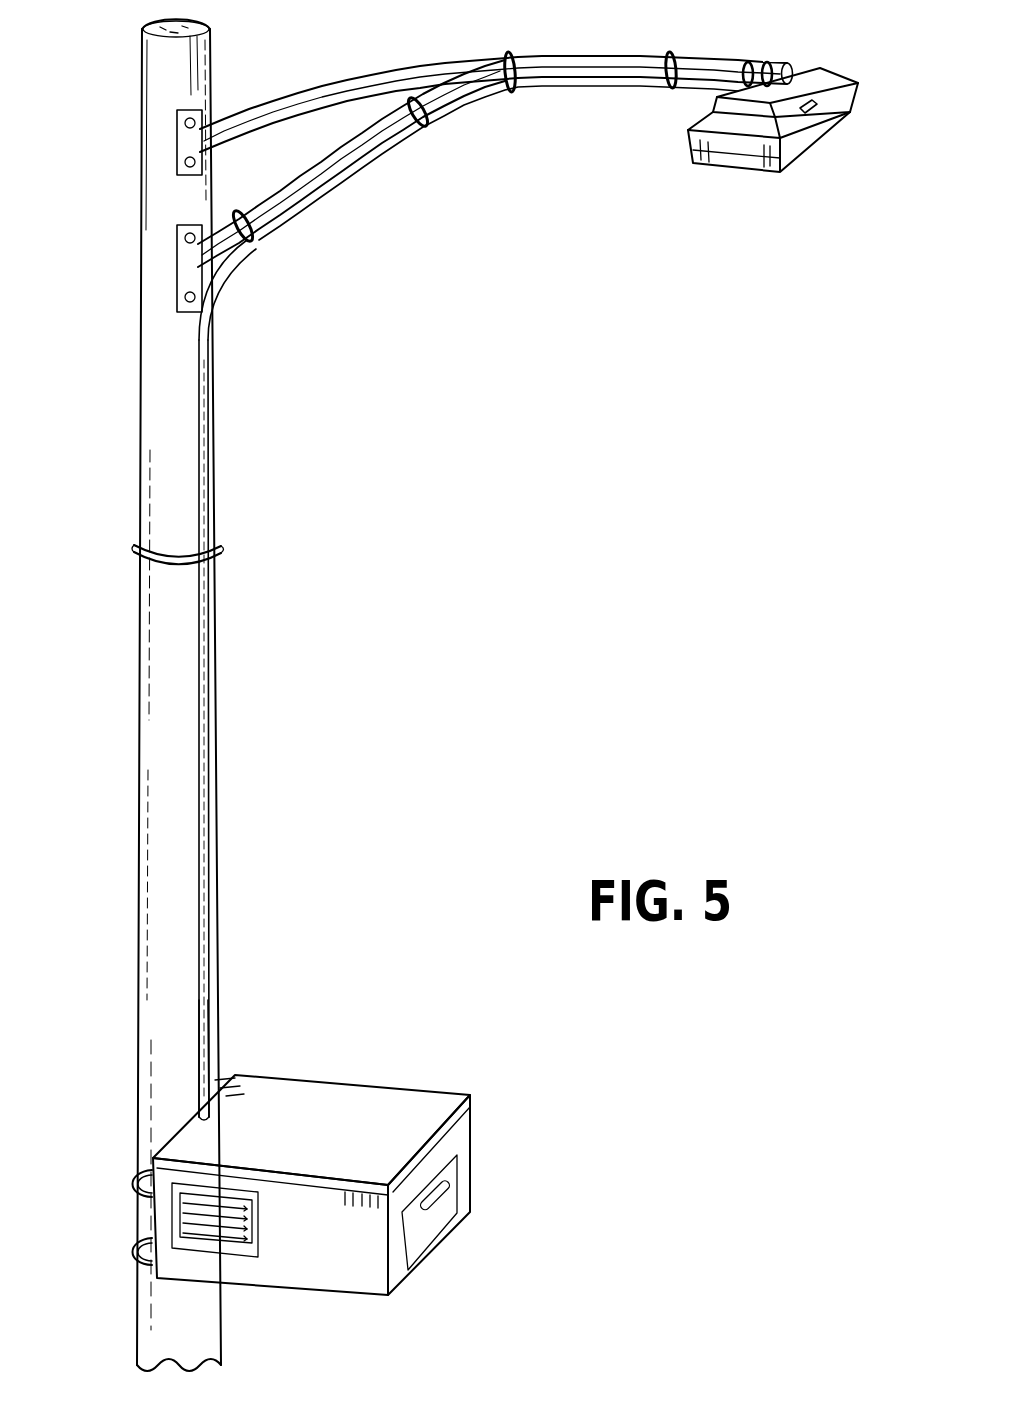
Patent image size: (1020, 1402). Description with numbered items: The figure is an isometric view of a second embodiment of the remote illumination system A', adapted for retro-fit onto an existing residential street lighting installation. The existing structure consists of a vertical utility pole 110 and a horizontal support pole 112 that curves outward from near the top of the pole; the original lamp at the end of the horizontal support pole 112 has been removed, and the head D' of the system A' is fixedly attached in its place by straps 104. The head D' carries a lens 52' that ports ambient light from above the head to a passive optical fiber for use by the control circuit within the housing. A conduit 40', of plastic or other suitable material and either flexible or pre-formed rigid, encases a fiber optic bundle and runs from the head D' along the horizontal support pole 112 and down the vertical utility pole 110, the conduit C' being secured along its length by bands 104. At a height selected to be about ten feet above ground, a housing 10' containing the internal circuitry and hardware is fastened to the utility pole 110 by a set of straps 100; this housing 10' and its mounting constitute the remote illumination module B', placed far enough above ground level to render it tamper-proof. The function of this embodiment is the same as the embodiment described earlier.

The utility pole 110 is at (155, 769).
The horizontal support pole 112 is at (288, 105).
The bands 104 is at (255, 236).
The straps 100 is at (135, 1185).
The housing 10' is at (311, 1163).
The conduit 40' is at (244, 1058).
The lens 52' is at (843, 134).
The system A' is at (294, 686).
The remote illumination module B' is at (476, 1062).
The conduit C' is at (468, 603).
The head D' is at (778, 86).